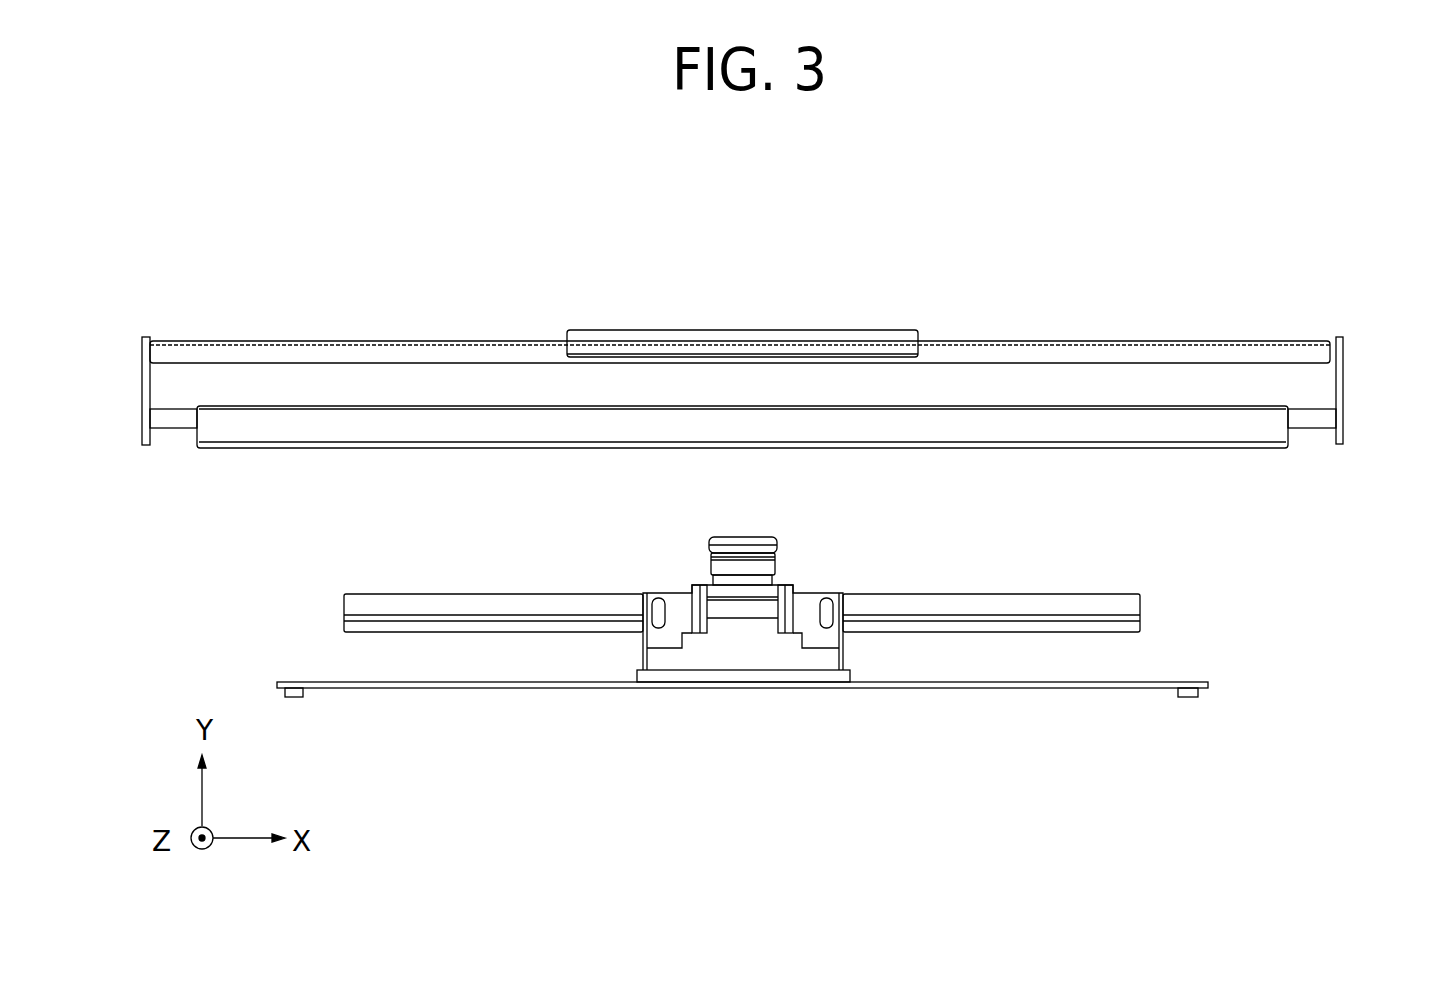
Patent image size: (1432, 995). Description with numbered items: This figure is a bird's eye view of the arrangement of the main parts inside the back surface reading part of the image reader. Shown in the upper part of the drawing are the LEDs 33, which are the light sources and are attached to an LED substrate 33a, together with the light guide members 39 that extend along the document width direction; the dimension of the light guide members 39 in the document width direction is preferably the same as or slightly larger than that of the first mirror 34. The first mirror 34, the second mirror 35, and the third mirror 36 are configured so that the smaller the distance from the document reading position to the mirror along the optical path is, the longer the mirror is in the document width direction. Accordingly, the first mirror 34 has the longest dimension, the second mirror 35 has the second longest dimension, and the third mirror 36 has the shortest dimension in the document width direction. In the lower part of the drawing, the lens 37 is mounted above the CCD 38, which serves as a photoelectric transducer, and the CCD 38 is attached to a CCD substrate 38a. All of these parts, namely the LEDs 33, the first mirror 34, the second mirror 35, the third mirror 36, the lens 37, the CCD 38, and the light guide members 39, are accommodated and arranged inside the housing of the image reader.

The LEDs 33 is at (142, 420).
The LED substrate 33a is at (142, 430).
The first mirror 34 is at (1106, 430).
The second mirror 35 is at (1025, 605).
The third mirror 36 is at (800, 336).
The lens 37 is at (711, 565).
The CCD 38 is at (712, 672).
The CCD substrate 38a is at (1047, 690).
The light guide members 39 is at (1012, 350).